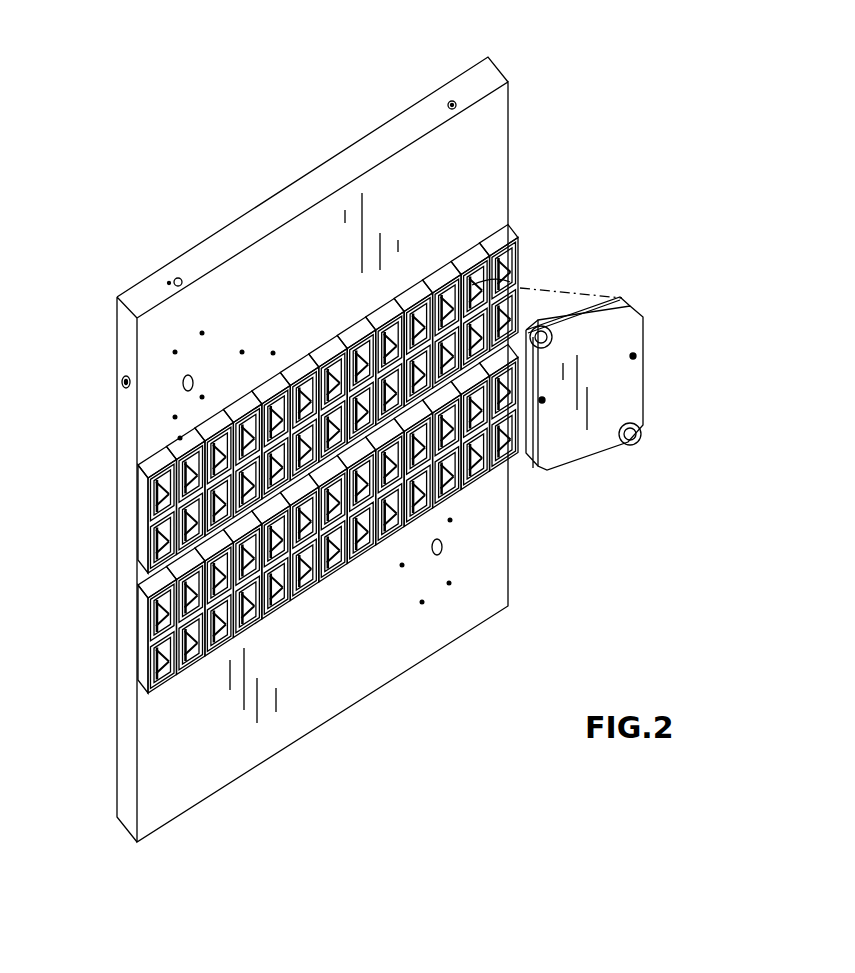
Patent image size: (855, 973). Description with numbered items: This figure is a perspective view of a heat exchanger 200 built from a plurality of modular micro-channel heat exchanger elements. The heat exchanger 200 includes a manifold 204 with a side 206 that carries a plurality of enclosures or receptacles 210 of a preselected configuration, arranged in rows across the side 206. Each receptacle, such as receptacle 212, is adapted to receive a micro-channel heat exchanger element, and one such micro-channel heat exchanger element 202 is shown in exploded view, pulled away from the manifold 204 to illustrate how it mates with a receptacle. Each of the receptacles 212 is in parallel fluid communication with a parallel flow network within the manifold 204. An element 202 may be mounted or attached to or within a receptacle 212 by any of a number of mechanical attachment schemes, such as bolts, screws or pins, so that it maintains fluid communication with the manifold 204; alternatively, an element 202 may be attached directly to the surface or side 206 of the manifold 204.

The heat exchanger 200 is at (492, 78).
The micro-channel heat exchanger element 202 is at (572, 458).
The manifold 204 is at (240, 240).
The side 206 is at (411, 638).
The receptacles 210 is at (104, 698).
The receptacle 212 is at (163, 690).